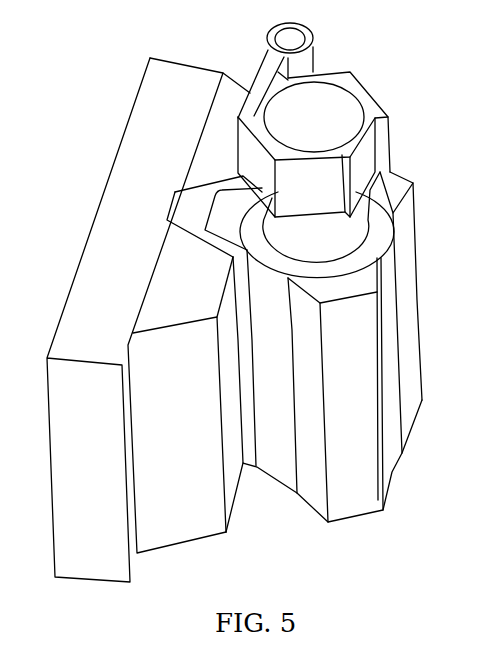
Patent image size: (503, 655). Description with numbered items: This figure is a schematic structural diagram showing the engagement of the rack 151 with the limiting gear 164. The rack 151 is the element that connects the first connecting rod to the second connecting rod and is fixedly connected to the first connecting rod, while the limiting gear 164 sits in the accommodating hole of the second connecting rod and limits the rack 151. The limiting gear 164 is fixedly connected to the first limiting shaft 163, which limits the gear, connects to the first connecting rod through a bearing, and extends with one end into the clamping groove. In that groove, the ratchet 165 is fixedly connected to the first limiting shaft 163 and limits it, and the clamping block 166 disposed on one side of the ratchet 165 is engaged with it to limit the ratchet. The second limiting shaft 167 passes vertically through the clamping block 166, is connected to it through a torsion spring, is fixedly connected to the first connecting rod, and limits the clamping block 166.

The rack 151 is at (115, 212).
The first limiting shaft 163 is at (342, 110).
The limiting gear 164 is at (413, 367).
The ratchet 165 is at (390, 137).
The clamping block 166 is at (313, 40).
The second limiting shaft 167 is at (288, 35).